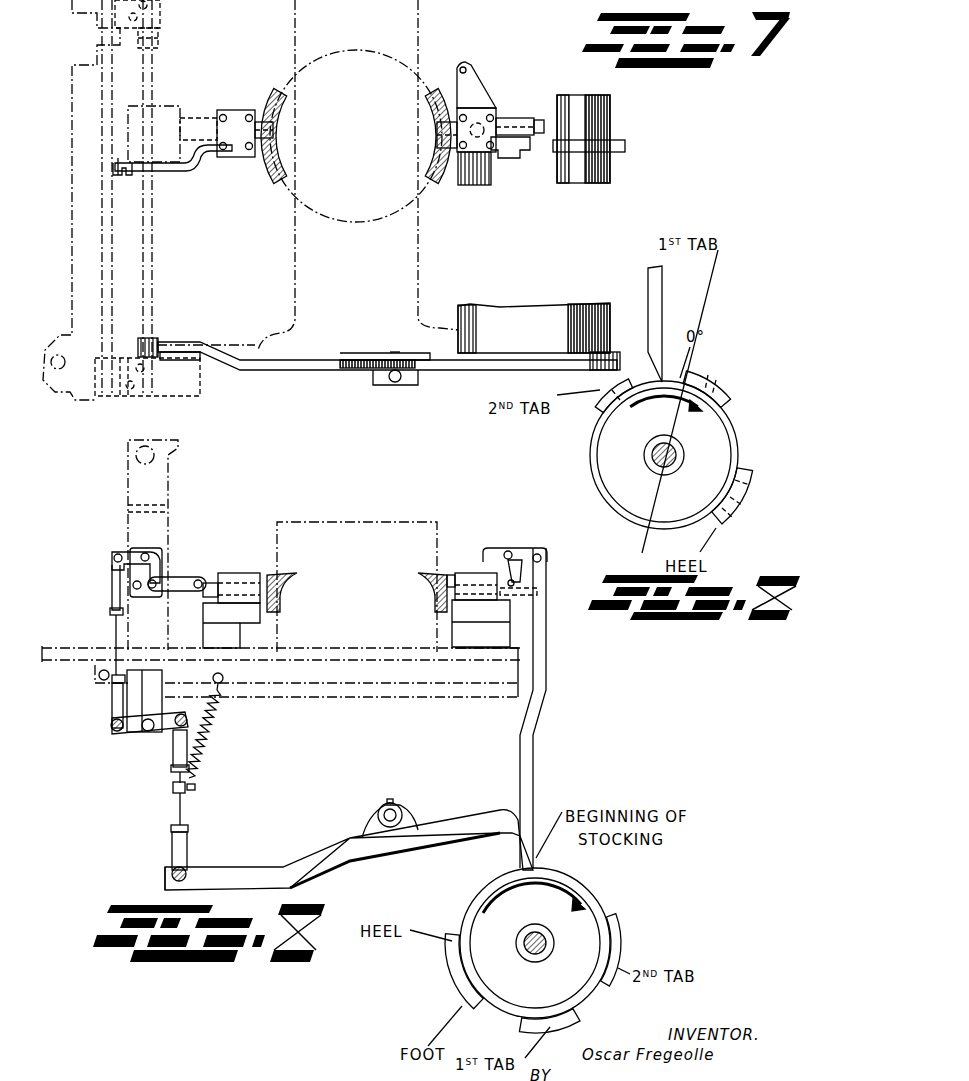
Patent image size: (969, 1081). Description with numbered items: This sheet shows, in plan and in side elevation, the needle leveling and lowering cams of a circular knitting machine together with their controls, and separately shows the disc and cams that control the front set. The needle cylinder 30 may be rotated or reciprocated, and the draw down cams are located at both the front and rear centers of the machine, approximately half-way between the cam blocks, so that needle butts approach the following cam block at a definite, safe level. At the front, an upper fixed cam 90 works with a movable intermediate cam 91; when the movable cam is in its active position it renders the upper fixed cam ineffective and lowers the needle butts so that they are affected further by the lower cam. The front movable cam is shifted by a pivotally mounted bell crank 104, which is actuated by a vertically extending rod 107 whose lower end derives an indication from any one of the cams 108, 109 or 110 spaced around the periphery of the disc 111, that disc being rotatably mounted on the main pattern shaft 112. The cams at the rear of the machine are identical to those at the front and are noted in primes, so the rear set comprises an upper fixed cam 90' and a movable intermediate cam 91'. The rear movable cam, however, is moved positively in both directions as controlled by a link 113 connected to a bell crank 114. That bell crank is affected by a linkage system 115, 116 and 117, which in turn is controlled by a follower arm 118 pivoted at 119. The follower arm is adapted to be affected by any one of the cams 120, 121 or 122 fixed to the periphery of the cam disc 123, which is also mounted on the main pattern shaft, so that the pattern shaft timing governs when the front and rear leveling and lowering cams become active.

In FIG. 8, the needle cylinder 30 is at (378, 524).
In FIG. 7, the upper fixed cam 90 is at (426, 133).
In FIG. 7, the upper fixed cam 90' is at (292, 130).
In FIG. 7, the movable intermediate cam 91 is at (423, 136).
In FIG. 8, the movable intermediate cam 91 is at (412, 592).
In FIG. 7, the movable intermediate cam 91' is at (295, 136).
In FIG. 8, the movable intermediate cam 91' is at (306, 582).
In FIG. 7, the bell crank 104 is at (497, 153).
In FIG. 8, the bell crank 104 is at (536, 546).
In FIG. 7, the vertically extending rod 107 is at (516, 155).
In FIG. 8A, the vertically extending rod 107 is at (662, 316).
In FIG. 8, the vertically extending rod 107 is at (546, 726).
In FIG. 8A, the cam 108 is at (606, 398).
In FIG. 7, the cam 109 is at (566, 147).
In FIG. 8A, the cam 109 is at (726, 398).
In FIG. 7, the cam 110 is at (622, 153).
In FIG. 8A, the cam 110 is at (740, 492).
In FIG. 7, the disc 111 is at (510, 78).
In FIG. 8A, the disc 111 is at (664, 455).
In FIG. 8A, the main pattern shaft 112 is at (679, 461).
In FIG. 8, the main pattern shaft 112 is at (545, 940).
In FIG. 7, the link 113 is at (178, 172).
In FIG. 8, the link 113 is at (178, 578).
In FIG. 7, the bell crank 114 is at (121, 176).
In FIG. 8, the bell crank 114 is at (123, 550).
In FIG. 8, the linkage system 115 is at (113, 709).
In FIG. 8, the linkage system 116 is at (137, 731).
In FIG. 8, the linkage system 117 is at (187, 808).
In FIG. 7, the follower arm 118 is at (272, 366).
In FIG. 8, the follower arm 118 is at (328, 858).
In FIG. 8, the pivot 119 is at (400, 815).
In FIG. 7, the cam 120 is at (616, 357).
In FIG. 8, the cam 120 is at (586, 881).
In FIG. 8, the cam 121 is at (530, 1022).
In FIG. 8, the cam 122 is at (458, 975).
In FIG. 7, the cam disc 123 is at (505, 320).
In FIG. 8, the cam disc 123 is at (535, 943).